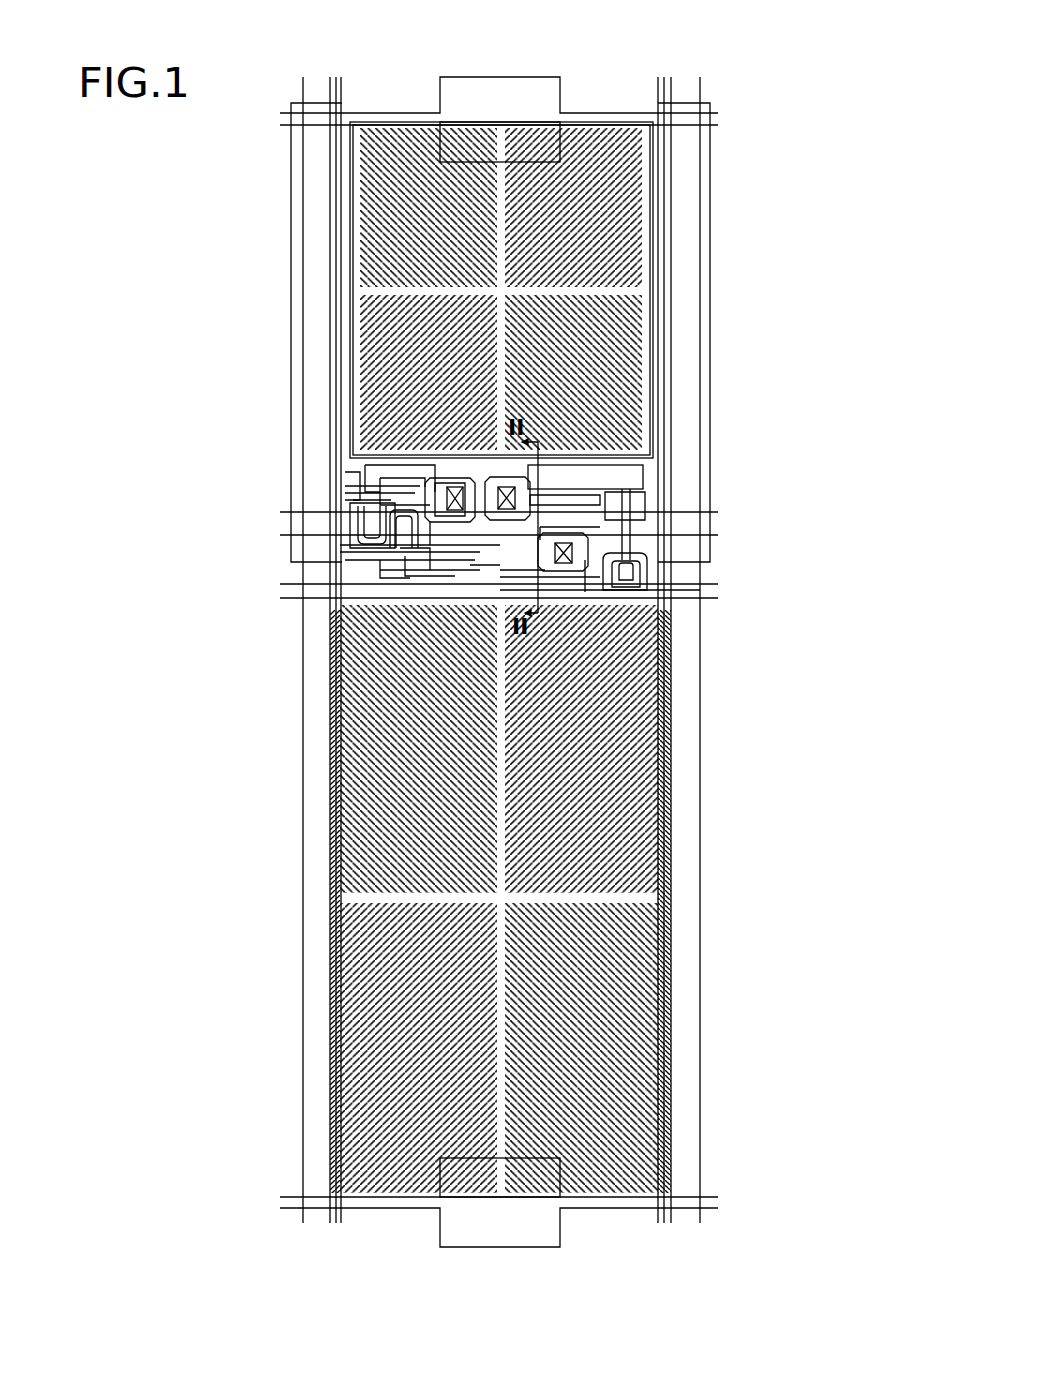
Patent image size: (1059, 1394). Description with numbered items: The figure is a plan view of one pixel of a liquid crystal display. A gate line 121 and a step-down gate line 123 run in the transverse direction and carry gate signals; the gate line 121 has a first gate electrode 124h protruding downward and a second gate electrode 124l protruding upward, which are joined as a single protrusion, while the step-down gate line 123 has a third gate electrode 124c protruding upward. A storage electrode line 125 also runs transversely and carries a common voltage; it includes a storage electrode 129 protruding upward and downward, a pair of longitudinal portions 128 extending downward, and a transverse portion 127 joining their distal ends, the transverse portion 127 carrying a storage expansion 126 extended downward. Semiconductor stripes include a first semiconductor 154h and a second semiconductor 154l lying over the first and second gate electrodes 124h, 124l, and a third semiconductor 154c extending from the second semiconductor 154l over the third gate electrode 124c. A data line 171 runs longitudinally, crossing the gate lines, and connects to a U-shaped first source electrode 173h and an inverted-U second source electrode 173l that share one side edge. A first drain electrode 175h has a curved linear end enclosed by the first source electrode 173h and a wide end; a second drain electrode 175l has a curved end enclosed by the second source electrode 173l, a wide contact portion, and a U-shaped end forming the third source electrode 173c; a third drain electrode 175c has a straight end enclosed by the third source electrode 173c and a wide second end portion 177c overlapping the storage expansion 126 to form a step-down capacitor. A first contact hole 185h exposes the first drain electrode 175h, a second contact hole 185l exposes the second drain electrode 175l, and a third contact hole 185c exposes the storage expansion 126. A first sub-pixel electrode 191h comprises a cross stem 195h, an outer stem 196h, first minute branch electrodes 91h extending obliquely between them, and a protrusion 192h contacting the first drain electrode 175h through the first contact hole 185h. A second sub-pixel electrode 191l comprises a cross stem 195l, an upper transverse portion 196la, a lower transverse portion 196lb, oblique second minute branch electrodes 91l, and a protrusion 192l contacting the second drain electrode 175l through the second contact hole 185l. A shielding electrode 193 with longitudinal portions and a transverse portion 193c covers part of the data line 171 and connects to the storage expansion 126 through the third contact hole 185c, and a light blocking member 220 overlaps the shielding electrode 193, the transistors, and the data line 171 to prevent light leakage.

The gate line 121 is at (710, 506).
The step-down gate line 123 is at (703, 578).
The first gate electrode 124h is at (420, 565).
The second gate electrode 124l is at (430, 470).
The third gate electrode 124c is at (650, 570).
The storage electrode line 125 is at (606, 122).
The storage expansion 126 is at (637, 495).
The transverse portion 127 is at (405, 490).
The longitudinal portions 128 is at (648, 250).
The storage electrode 129 is at (562, 142).
The first semiconductor 154h is at (355, 545).
The second semiconductor 154l is at (470, 576).
The third semiconductor 154c is at (592, 602).
The data line 171 is at (335, 245).
The first source electrode 173h is at (400, 560).
The second source electrode 173l is at (440, 482).
The third source electrode 173c is at (603, 592).
The first drain electrode 175h is at (360, 520).
The second drain electrode 175l is at (455, 572).
The third drain electrode 175c is at (632, 543).
The second end portion 177c is at (612, 462).
The first contact hole 185h is at (455, 510).
The second contact hole 185l is at (565, 572).
The third contact hole 185c is at (505, 487).
The first sub-pixel electrode 191h is at (451, 537).
The second sub-pixel electrode 191l is at (470, 896).
The protrusion 192h is at (345, 506).
The protrusion 192l is at (545, 600).
The shielding electrode 193 is at (300, 300).
The transverse portion 193c is at (582, 498).
The cross stem 195h is at (600, 268).
The cross stem 195l is at (622, 912).
The outer stem 196h is at (648, 335).
The upper transverse portion 196la is at (660, 628).
The lower transverse portion 196lb is at (623, 1200).
The light blocking member 220 is at (335, 183).
The first minute branch electrode 91h is at (617, 345).
The second minute branch electrode 91l is at (330, 795).